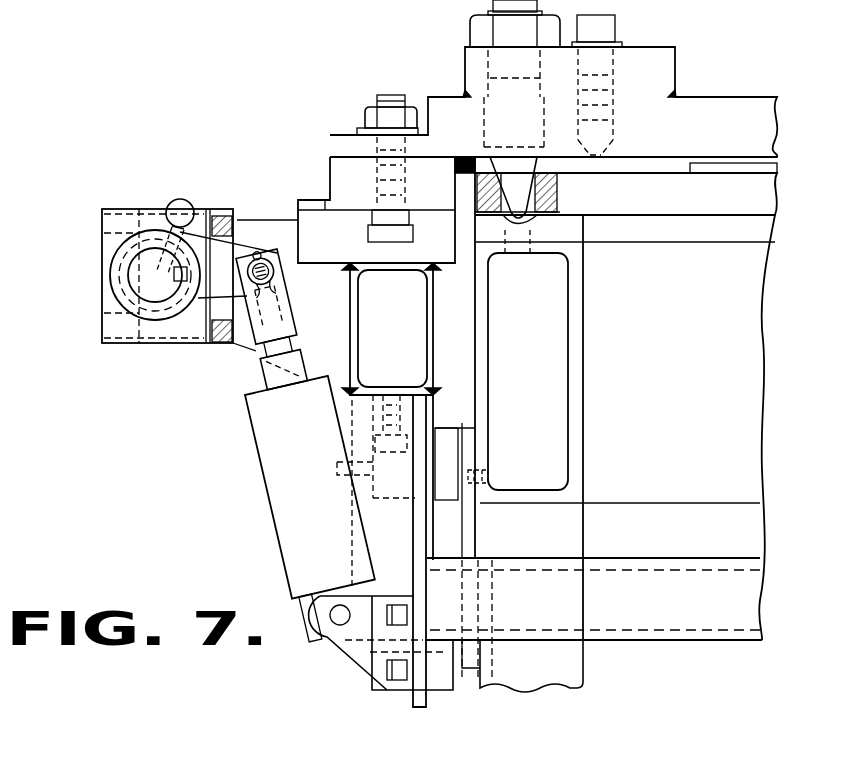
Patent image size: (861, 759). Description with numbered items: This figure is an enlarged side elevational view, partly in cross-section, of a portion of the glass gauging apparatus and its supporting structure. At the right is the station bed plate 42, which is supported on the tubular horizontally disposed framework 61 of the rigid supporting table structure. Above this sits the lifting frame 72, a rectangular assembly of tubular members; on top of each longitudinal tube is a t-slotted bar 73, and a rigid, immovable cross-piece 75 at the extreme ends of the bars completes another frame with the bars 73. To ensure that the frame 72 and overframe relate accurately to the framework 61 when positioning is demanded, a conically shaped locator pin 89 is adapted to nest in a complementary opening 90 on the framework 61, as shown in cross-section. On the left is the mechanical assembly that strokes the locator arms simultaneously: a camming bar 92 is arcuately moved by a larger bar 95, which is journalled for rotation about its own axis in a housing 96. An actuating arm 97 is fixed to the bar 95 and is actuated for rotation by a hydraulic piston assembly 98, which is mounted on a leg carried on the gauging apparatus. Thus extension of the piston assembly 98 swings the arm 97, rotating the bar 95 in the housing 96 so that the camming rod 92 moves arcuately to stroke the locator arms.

The station bed plate 42 is at (708, 200).
The tubular horizontally disposed framework 61 is at (580, 307).
The lifting frame 72 is at (427, 314).
The t-slotted bar 73 is at (312, 222).
The rigid cross-piece 75 is at (733, 108).
The conically shaped locator pin 89 is at (550, 186).
The complementary opening 90 is at (480, 190).
The camming bar 92 is at (170, 200).
The larger bar 95 is at (140, 283).
The housing 96 is at (103, 240).
The actuating arm 97 is at (203, 322).
The hydraulic piston assembly 98 is at (270, 433).